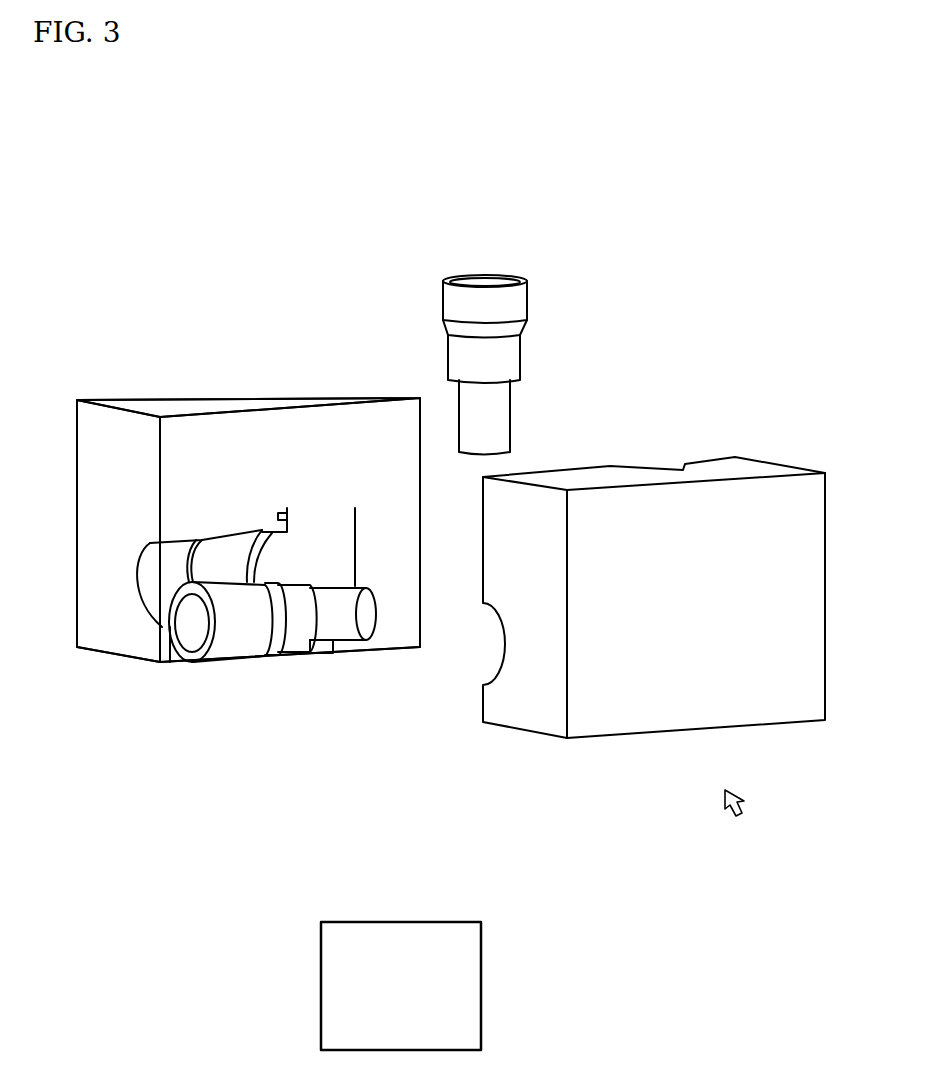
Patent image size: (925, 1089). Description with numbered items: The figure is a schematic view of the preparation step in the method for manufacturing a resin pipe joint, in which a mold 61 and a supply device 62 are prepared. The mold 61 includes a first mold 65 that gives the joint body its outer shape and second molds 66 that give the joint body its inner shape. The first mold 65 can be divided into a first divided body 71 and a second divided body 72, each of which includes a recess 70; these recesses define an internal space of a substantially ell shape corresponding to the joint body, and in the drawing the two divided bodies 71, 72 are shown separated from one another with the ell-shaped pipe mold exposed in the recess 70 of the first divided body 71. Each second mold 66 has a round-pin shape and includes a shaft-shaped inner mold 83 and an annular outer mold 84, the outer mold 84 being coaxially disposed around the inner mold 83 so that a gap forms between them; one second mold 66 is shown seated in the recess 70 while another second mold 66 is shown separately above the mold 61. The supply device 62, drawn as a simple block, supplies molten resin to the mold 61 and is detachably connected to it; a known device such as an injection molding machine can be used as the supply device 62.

The first mold 65 is at (362, 322).
The first divided body 71 is at (240, 388).
The second divided body 72 is at (480, 495).
The recess 70 is at (148, 585).
The second mold 66 is at (195, 667).
The outer mold 84 is at (228, 648).
The inner mold 83 is at (350, 637).
The mold 61 is at (746, 820).
The supply device 62 is at (320, 980).